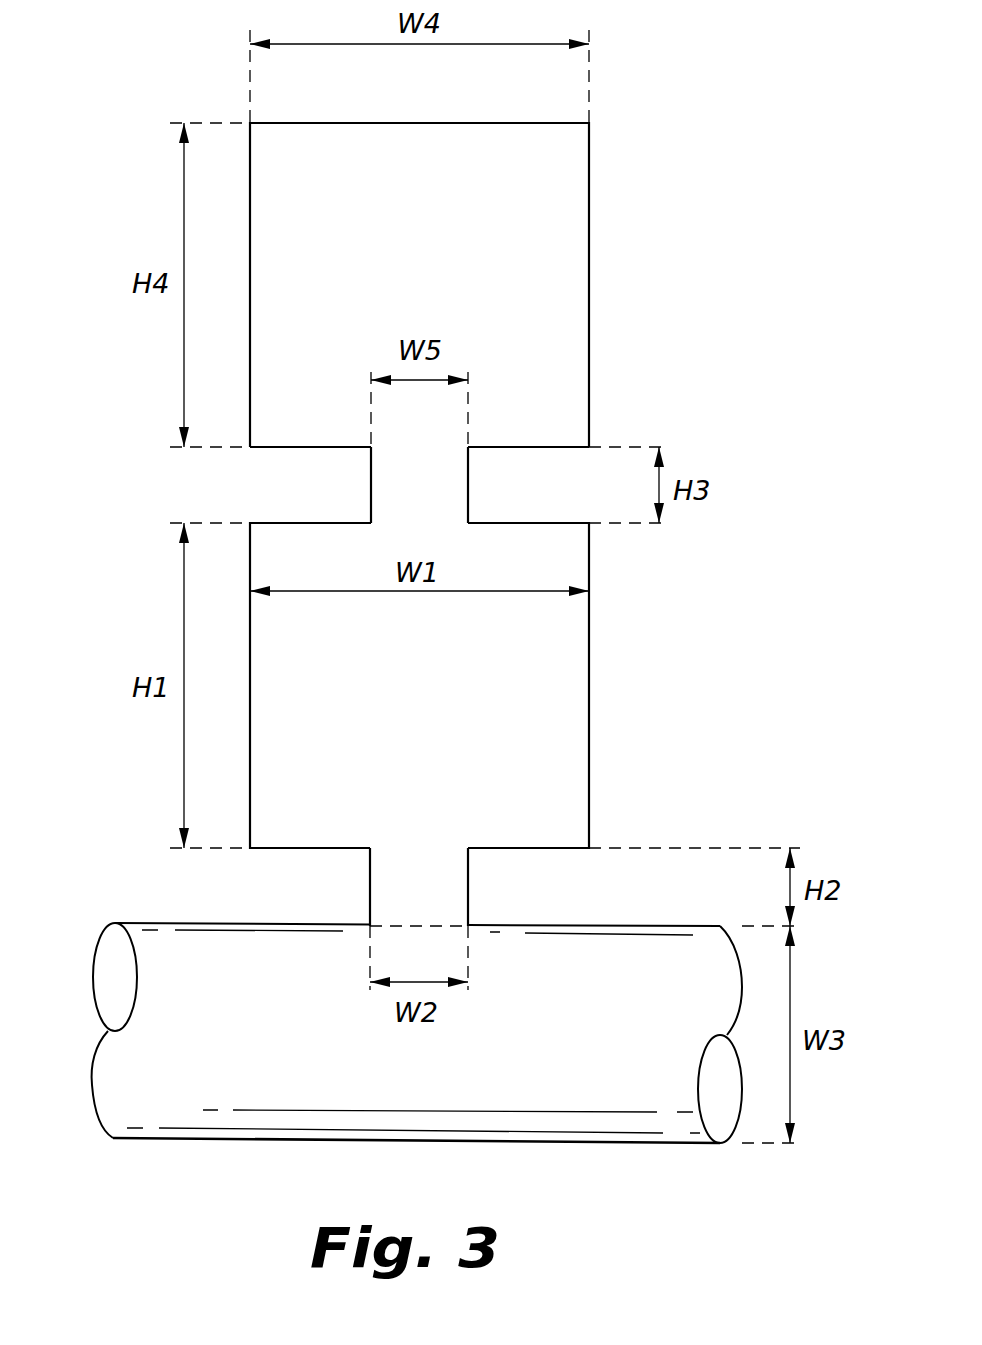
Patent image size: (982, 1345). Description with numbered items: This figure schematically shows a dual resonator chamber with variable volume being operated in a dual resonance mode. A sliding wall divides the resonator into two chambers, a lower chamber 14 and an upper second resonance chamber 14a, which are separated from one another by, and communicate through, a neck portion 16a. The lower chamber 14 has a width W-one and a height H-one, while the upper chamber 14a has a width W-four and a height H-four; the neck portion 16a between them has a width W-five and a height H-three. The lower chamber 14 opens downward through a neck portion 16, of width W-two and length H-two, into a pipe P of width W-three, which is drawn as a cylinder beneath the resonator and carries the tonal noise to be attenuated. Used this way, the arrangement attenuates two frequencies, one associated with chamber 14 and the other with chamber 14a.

The second resonance chamber 14a is at (589, 288).
The resonance chamber 14 is at (589, 703).
The neck portion 16a is at (468, 487).
The neck portion 16 is at (468, 888).
The pipe P is at (655, 1143).